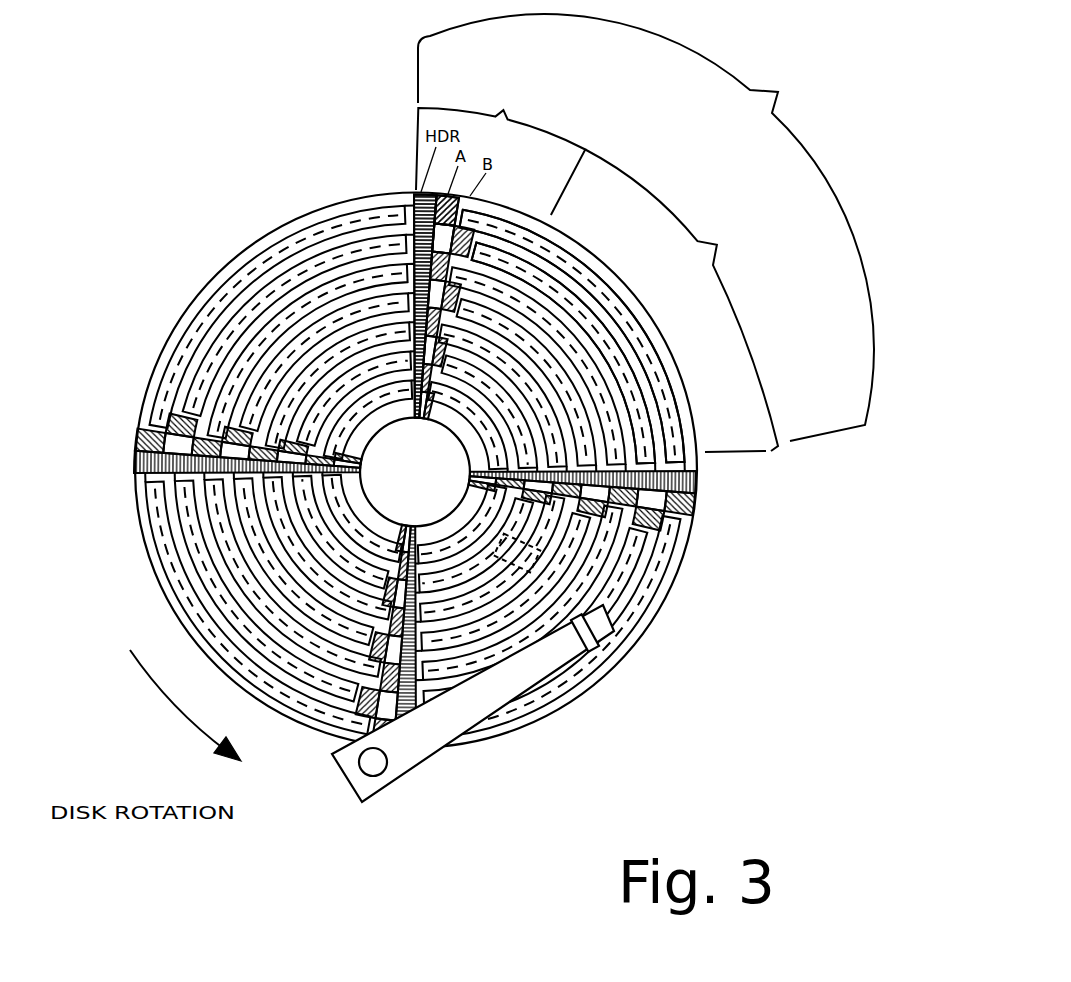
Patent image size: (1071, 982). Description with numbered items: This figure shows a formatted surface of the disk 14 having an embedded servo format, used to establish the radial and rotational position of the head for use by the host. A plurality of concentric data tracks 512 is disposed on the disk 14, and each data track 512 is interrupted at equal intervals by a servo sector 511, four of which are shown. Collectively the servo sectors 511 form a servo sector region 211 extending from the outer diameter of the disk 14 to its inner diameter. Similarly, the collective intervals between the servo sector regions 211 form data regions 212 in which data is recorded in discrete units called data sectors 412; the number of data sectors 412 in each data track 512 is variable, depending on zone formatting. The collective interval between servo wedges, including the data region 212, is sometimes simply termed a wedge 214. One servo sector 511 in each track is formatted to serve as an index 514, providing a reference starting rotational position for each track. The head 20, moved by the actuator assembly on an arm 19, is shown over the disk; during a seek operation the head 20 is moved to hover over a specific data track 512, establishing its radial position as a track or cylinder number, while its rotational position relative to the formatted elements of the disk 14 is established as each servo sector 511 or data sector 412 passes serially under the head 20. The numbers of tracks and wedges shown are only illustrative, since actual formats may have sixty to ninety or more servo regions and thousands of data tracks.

The disk 14 is at (318, 212).
The arm 19 is at (463, 714).
The head 20 is at (616, 632).
The servo sector region 211 is at (541, 149).
The data region 212 is at (706, 301).
The wedge 214 is at (665, 227).
The data sector 412 is at (558, 233).
The servo sector 511 is at (412, 205).
The data track 512 is at (584, 266).
The index 514 is at (424, 193).